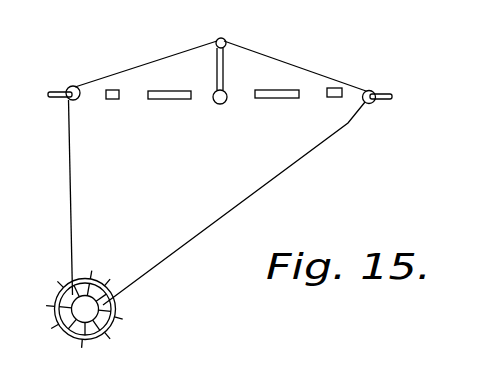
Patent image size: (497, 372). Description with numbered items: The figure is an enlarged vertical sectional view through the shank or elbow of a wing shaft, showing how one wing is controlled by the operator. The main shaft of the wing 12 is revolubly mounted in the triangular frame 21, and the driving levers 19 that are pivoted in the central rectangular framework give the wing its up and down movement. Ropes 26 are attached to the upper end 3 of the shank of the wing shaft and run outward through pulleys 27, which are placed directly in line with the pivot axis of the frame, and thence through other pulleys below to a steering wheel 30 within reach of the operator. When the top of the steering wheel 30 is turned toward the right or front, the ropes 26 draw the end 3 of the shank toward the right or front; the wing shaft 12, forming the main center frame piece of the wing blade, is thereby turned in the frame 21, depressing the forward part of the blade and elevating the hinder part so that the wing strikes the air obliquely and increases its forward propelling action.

The upper end of the shank 3 is at (226, 41).
The main shaft of the wing 12 is at (222, 104).
The driving levers 19 is at (108, 100).
The triangular frame 21 is at (157, 100).
The ropes 26 is at (72, 206).
The pulleys 27 is at (68, 85).
The steering wheel 30 is at (116, 327).